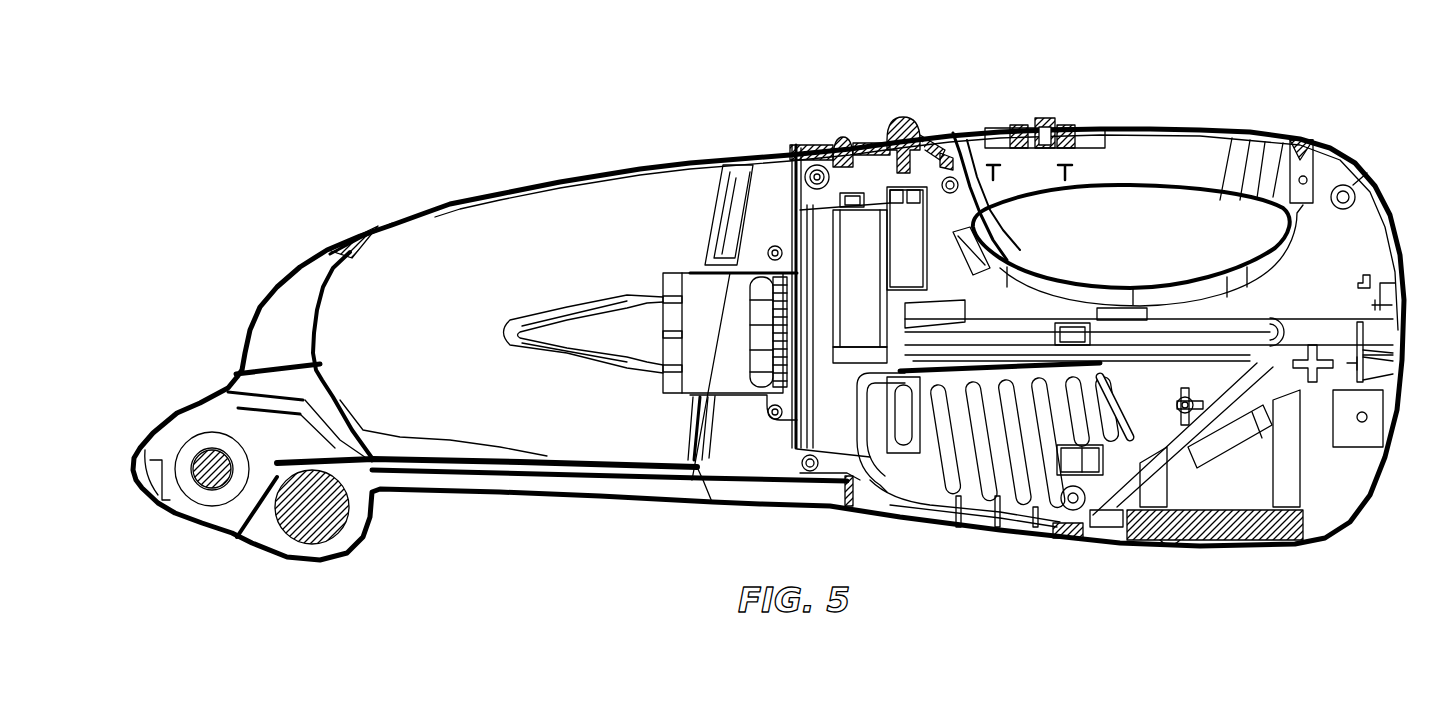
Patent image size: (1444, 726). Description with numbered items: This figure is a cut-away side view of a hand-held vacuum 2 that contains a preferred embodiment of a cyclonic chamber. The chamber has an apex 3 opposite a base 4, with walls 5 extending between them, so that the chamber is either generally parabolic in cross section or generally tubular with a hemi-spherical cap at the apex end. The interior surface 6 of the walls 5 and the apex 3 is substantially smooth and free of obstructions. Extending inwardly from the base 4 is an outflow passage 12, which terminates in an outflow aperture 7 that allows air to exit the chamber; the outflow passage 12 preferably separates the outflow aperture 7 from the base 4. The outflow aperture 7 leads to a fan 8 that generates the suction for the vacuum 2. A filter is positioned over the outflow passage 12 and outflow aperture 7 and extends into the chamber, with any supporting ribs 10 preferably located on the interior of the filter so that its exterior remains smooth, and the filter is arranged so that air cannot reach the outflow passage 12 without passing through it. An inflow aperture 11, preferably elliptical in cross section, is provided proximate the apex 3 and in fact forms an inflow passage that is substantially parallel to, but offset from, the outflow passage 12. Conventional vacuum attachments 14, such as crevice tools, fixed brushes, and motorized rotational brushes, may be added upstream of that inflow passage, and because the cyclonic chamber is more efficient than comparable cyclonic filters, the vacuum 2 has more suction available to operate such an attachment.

The vacuum 2 is at (1226, 103).
The apex 3 is at (325, 325).
The base 4 is at (710, 230).
The walls 5 is at (507, 190).
The interior surface 6 is at (410, 223).
The outflow aperture 7 is at (658, 345).
The fan 8 is at (845, 228).
The supporting ribs 10 is at (555, 310).
The inflow aperture 11 is at (365, 430).
The outflow passage 12 is at (697, 300).
The vacuum attachments 14 is at (187, 427).